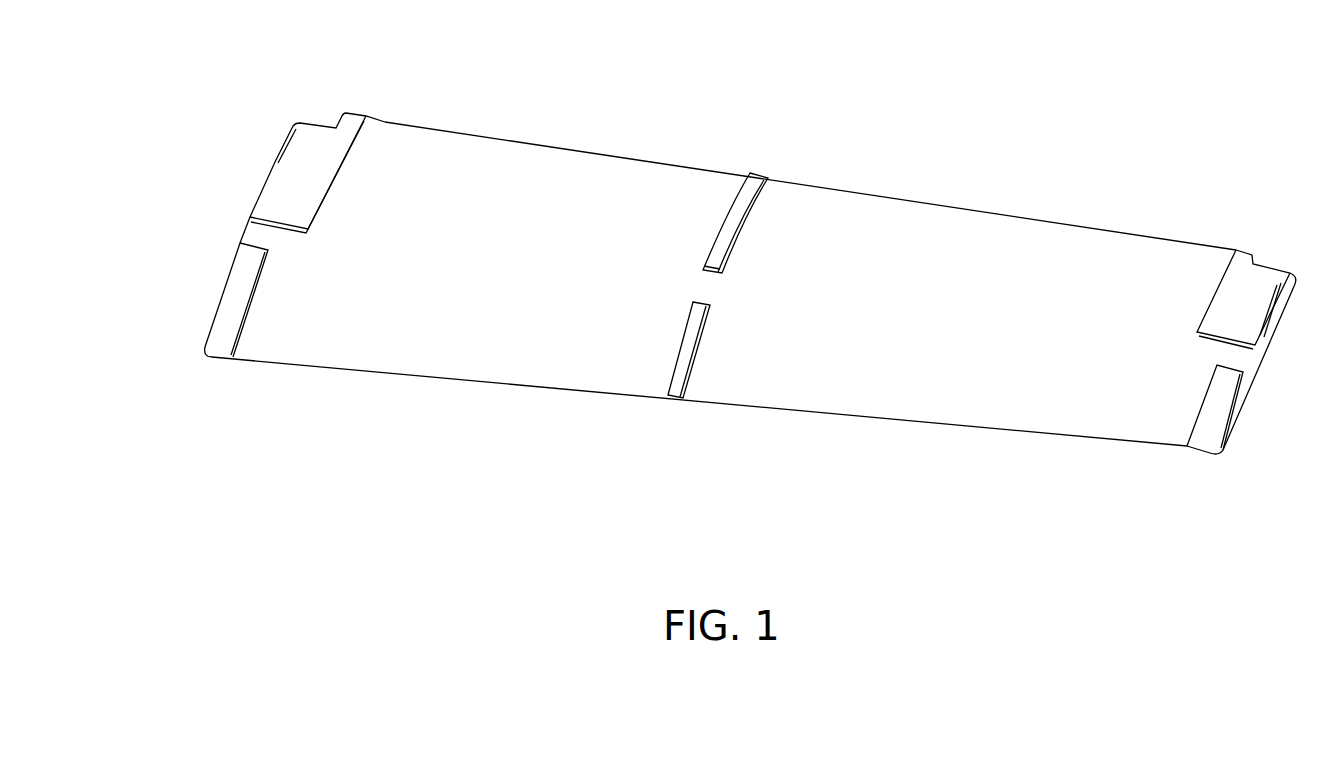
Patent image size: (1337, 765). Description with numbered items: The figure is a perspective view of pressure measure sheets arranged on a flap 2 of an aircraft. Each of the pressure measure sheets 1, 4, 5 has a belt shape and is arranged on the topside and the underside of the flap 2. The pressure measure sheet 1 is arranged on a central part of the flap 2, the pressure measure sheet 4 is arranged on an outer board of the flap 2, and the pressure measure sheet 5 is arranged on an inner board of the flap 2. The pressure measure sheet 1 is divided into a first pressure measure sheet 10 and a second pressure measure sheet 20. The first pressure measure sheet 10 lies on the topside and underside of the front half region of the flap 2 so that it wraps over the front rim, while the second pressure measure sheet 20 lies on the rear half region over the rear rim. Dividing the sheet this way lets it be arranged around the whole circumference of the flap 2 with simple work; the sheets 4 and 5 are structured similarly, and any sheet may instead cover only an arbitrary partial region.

The pressure measure sheet 1 is at (752, 252).
The flap 2 is at (928, 222).
The pressure measure sheet 4 is at (1258, 242).
The pressure measure sheet 5 is at (380, 107).
The first pressure measure sheet 10 is at (730, 200).
The second pressure measure sheet 20 is at (690, 373).